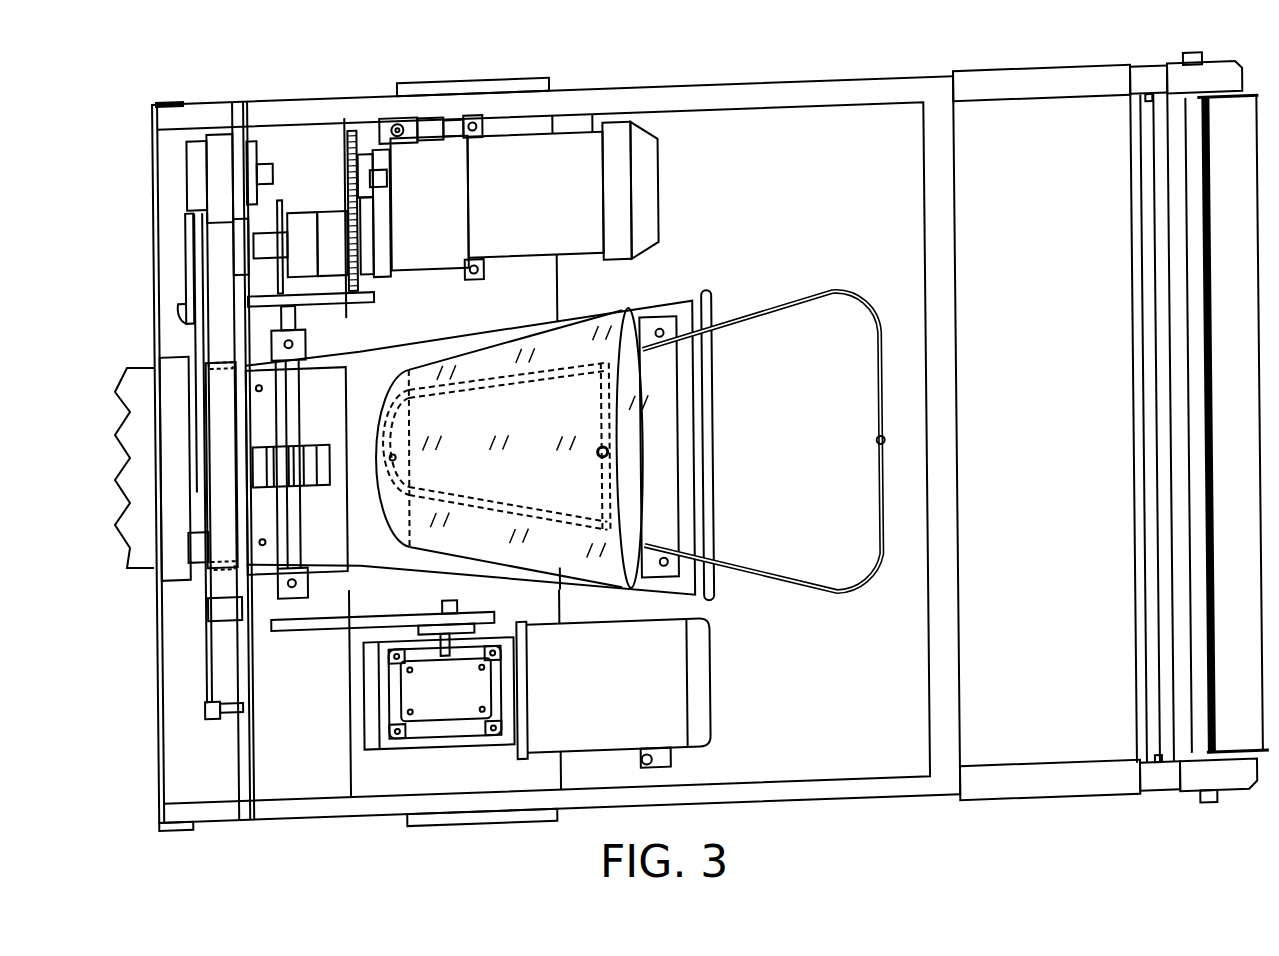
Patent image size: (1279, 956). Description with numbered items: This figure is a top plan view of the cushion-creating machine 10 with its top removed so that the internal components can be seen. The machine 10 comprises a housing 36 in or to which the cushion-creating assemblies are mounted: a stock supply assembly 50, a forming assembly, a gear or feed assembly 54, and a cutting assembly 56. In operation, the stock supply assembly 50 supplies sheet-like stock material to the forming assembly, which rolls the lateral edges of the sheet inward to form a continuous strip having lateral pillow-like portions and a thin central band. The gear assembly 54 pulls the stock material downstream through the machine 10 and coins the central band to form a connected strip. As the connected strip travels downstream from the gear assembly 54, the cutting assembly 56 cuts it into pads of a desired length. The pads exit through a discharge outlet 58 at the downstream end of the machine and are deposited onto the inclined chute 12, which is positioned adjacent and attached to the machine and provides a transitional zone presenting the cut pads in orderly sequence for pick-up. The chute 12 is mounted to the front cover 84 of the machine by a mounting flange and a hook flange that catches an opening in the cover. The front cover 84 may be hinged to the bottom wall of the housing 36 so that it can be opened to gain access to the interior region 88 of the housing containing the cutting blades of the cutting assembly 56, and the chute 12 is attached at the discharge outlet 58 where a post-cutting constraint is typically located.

The cushion-creating machine 10 is at (160, 94).
The inclined chute 12 is at (145, 358).
The housing 36 is at (738, 77).
The stock supply assembly 50 is at (1144, 54).
The gear assembly 54 is at (293, 640).
The cutting assembly 56 is at (180, 248).
The discharge outlet 58 is at (150, 540).
The front cover 84 is at (160, 733).
The interior region 88 is at (188, 645).